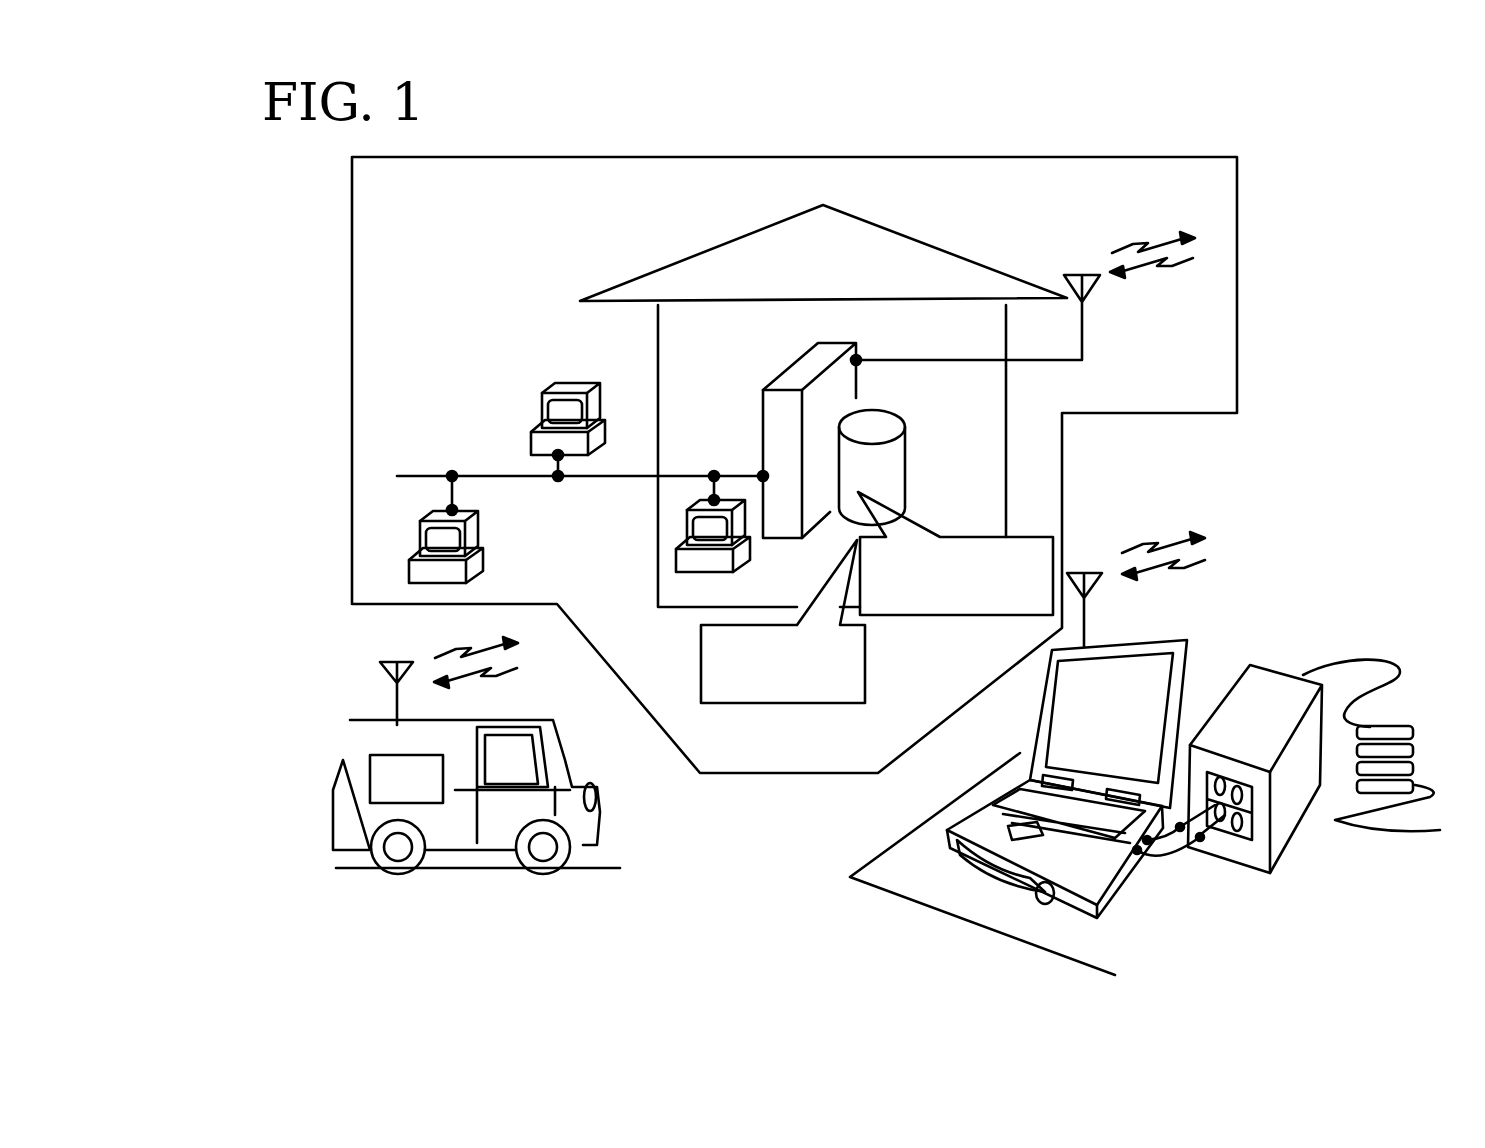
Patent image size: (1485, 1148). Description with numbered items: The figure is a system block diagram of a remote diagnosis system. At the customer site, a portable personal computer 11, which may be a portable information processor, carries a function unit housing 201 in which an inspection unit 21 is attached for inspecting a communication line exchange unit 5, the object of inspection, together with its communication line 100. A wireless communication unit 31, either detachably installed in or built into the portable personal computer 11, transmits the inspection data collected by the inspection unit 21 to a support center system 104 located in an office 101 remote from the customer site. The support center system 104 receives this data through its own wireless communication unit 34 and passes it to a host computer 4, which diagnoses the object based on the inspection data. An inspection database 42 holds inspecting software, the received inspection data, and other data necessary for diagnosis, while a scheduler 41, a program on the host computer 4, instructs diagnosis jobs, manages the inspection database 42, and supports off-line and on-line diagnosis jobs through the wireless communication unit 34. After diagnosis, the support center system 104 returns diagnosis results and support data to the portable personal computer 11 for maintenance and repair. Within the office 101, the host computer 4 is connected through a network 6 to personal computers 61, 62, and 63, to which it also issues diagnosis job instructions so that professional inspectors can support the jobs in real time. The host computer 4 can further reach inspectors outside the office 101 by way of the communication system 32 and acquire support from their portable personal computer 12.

The support center system 104 is at (750, 465).
The office 101 is at (823, 394).
The wireless communication unit 34 is at (1025, 296).
The host computer 4 is at (840, 427).
The network 6 is at (582, 506).
The personal computer 62 is at (543, 421).
The personal computer 63 is at (430, 529).
The personal computer 61 is at (672, 543).
The scheduler 41 is at (955, 580).
The inspection database 42 is at (783, 650).
The communication system 32 is at (420, 681).
The portable personal computer 12 is at (457, 797).
The wireless communication unit 31 is at (1136, 580).
The portable personal computer 11 is at (1018, 807).
The function unit housing 201 is at (1128, 900).
The inspection unit 21 is at (1170, 872).
The communication line exchange unit 5 is at (1257, 789).
The communication line 100 is at (1375, 725).